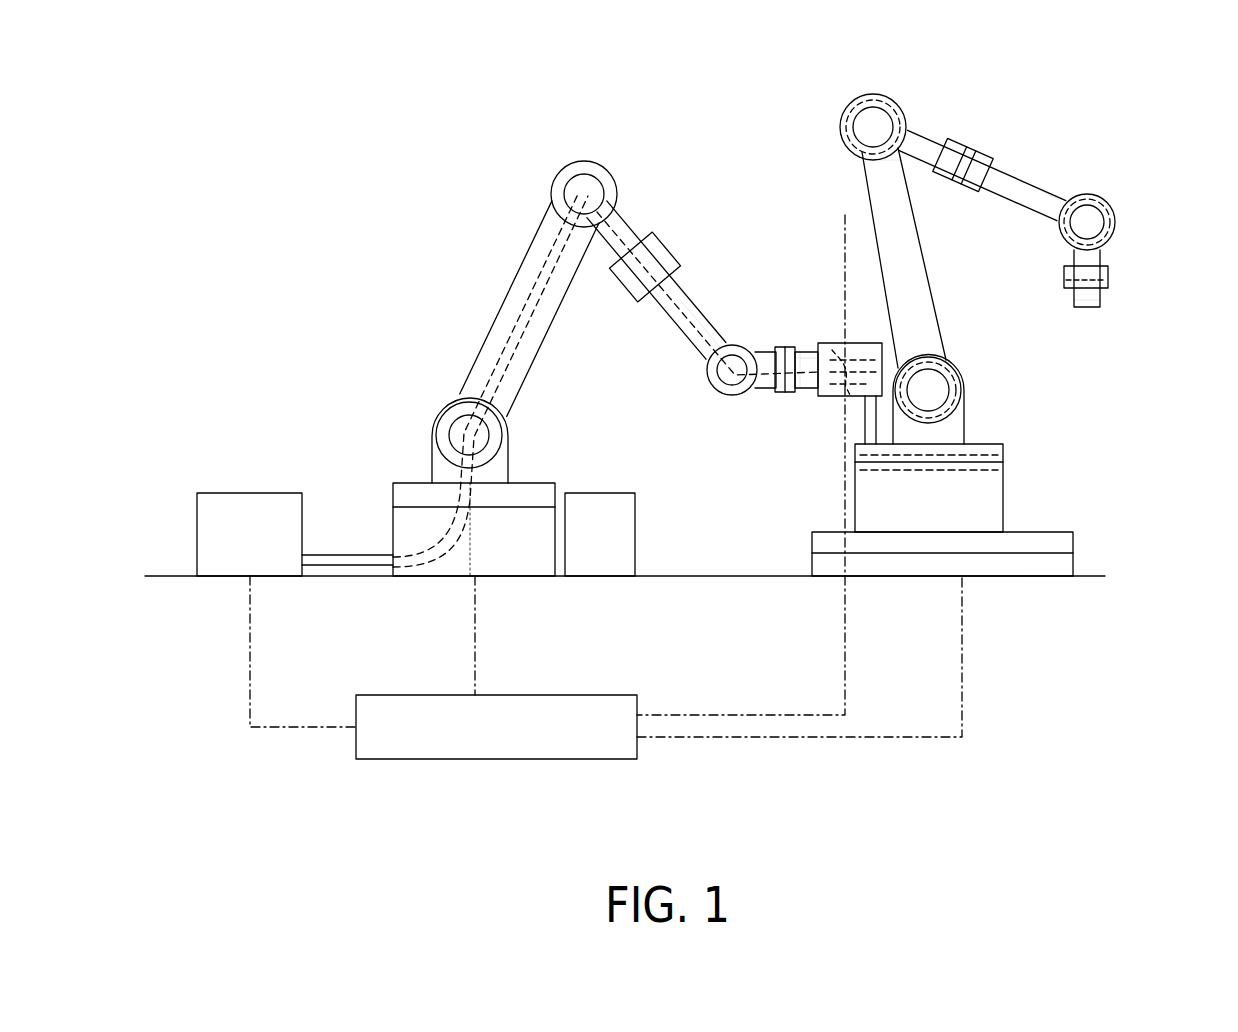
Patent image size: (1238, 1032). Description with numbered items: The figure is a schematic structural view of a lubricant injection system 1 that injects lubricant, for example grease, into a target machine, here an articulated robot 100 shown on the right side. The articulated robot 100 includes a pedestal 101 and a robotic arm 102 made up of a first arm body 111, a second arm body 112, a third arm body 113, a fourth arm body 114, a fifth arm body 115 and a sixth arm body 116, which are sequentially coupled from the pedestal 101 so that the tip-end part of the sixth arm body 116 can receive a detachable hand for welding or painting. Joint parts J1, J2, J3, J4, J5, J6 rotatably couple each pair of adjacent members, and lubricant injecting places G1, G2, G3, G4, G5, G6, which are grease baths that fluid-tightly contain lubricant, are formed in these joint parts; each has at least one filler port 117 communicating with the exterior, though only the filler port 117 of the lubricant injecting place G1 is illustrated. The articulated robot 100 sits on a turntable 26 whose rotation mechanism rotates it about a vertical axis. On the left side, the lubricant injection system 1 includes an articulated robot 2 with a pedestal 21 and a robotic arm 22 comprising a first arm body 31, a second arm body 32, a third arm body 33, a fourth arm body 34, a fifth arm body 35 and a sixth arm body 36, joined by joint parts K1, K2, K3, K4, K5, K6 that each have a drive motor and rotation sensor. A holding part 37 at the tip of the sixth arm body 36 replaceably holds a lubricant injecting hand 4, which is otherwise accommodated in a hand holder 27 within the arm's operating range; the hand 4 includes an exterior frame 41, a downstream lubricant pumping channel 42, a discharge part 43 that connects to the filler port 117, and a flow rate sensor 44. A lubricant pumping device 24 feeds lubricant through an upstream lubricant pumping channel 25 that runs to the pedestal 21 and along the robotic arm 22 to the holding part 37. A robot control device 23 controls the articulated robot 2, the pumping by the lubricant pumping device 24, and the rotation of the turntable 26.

The lubricant injection system 1 is at (290, 102).
The articulated robot 2 is at (530, 242).
The lubricant injecting hand 4 is at (845, 338).
The pedestal 21 is at (393, 530).
The robotic arm 22 is at (520, 285).
The robot control device 23 is at (495, 762).
The lubricant pumping device 24 is at (248, 493).
The upstream lubricant pumping channel 25 is at (540, 345).
The turntable 26 is at (1073, 548).
The hand holder 27 is at (635, 542).
The first arm body 31 is at (432, 462).
The second arm body 32 is at (470, 343).
The third arm body 33 is at (624, 225).
The fourth arm body 34 is at (700, 330).
The fifth arm body 35 is at (765, 352).
The sixth arm body 36 is at (806, 352).
The holding part 37 is at (812, 343).
The exterior frame 41 is at (870, 343).
The downstream lubricant pumping channel 42 is at (741, 450).
The discharge part 43 is at (866, 420).
The flow rate sensor 44 is at (795, 398).
The articulated robot 100 is at (1042, 180).
The pedestal 101 is at (1003, 505).
The robotic arm 102 is at (1040, 152).
The first arm body 111 is at (968, 430).
The second arm body 112 is at (945, 290).
The third arm body 113 is at (912, 130).
The fourth arm body 114 is at (1012, 205).
The fifth arm body 115 is at (1100, 258).
The sixth arm body 116 is at (1100, 300).
The filler port 117 is at (838, 455).
The joint part K1 is at (528, 476).
The joint part K2 is at (440, 418).
The joint part K3 is at (584, 160).
The joint part K4 is at (672, 258).
The joint part K5 is at (708, 374).
The joint part K6 is at (786, 347).
The joint part J1 is at (1003, 455).
The joint part J2 is at (948, 370).
The joint part J3 is at (840, 118).
The joint part J4 is at (985, 162).
The joint part J5 is at (1095, 195).
The joint part J6 is at (1108, 272).
The lubricant injecting place G1 is at (1003, 487).
The lubricant injecting place G2 is at (965, 380).
The lubricant injecting place G3 is at (870, 98).
The lubricant injecting place G4 is at (968, 150).
The lubricant injecting place G5 is at (1117, 216).
The lubricant injecting place G6 is at (1108, 284).